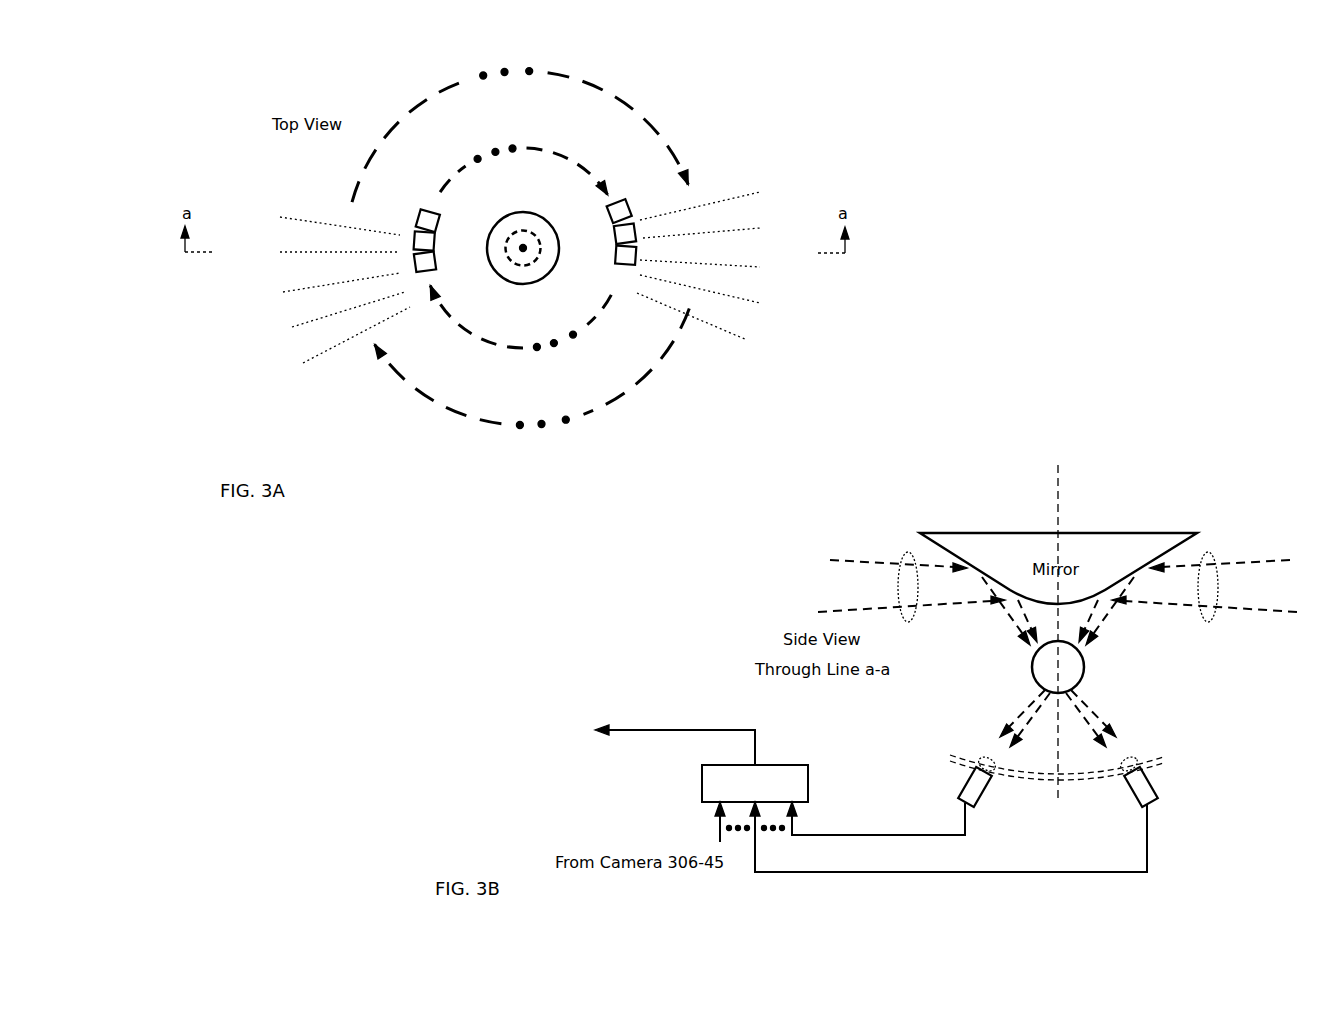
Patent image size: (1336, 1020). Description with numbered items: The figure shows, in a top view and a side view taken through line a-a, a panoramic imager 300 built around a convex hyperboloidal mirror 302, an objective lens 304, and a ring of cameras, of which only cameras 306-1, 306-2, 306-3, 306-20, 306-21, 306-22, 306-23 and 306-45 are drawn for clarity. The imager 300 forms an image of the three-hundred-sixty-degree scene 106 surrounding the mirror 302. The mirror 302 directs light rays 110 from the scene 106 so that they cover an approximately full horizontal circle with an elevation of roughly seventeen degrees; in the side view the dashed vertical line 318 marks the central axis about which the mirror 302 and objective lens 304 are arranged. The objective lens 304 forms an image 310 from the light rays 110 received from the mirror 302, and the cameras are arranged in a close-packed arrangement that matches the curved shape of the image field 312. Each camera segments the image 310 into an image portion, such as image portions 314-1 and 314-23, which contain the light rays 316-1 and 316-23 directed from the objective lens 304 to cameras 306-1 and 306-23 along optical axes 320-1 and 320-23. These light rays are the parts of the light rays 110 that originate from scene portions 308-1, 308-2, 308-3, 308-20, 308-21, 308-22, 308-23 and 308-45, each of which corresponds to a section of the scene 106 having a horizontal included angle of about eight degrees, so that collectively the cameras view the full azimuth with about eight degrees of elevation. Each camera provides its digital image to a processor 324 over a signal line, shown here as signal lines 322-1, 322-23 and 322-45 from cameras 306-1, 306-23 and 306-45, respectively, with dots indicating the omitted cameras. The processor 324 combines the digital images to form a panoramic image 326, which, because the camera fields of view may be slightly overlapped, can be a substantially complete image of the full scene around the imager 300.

In FIG. 3A, the imager 300 is at (398, 84).
In FIG. 3B, the imager 300 is at (900, 448).
In FIG. 3A, the scene 106 is at (788, 156).
In FIG. 3A, the light rays 110 is at (262, 392).
In FIG. 3A, the mirror 302 is at (524, 285).
In FIG. 3B, the mirror 302 is at (1095, 532).
In FIG. 3A, the objective lens 304 is at (524, 230).
In FIG. 3B, the objective lens 304 is at (1074, 677).
In FIG. 3A, the central axis 318 is at (521, 248).
In FIG. 3B, the central axis 318 is at (1056, 484).
In FIG. 3A, the camera 306-1 is at (436, 262).
In FIG. 3B, the camera 306-1 is at (958, 792).
In FIG. 3A, the camera 306-2 is at (437, 236).
In FIG. 3A, the camera 306-3 is at (428, 208).
In FIG. 3A, the camera 306-20 is at (614, 200).
In FIG. 3A, the camera 306-21 is at (614, 222).
In FIG. 3A, the camera 306-22 is at (616, 248).
In FIG. 3A, the camera 306-23 is at (627, 264).
In FIG. 3B, the camera 306-23 is at (1158, 792).
In FIG. 3A, the camera 306-45 is at (432, 272).
In FIG. 3A, the scene portion 308-1 is at (790, 261).
In FIG. 3B, the scene portion 308-1 is at (1291, 599).
In FIG. 3A, the scene portion 308-2 is at (790, 297).
In FIG. 3A, the scene portion 308-3 is at (790, 334).
In FIG. 3A, the scene portion 308-20 is at (295, 362).
In FIG. 3A, the scene portion 308-21 is at (295, 324).
In FIG. 3A, the scene portion 308-22 is at (295, 286).
In FIG. 3A, the scene portion 308-23 is at (295, 247).
In FIG. 3B, the scene portion 308-23 is at (872, 599).
In FIG. 3A, the scene portion 308-45 is at (801, 226).
In FIG. 3B, the image 310 is at (1147, 760).
In FIG. 3B, the image field 312 is at (1157, 763).
In FIG. 3B, the image portion 314-1 is at (990, 778).
In FIG. 3B, the image portion 314-23 is at (1125, 778).
In FIG. 3B, the light rays 316-1 is at (1210, 553).
In FIG. 3B, the light rays 316-23 is at (907, 553).
In FIG. 3B, the optical axis 320-1 is at (995, 752).
In FIG. 3B, the optical axis 320-23 is at (1153, 728).
In FIG. 3B, the signal line 322-1 is at (900, 836).
In FIG. 3B, the signal line 322-23 is at (1125, 873).
In FIG. 3B, the signal line 322-45 is at (716, 838).
In FIG. 3B, the processor 324 is at (790, 765).
In FIG. 3B, the panoramic image 326 is at (666, 729).